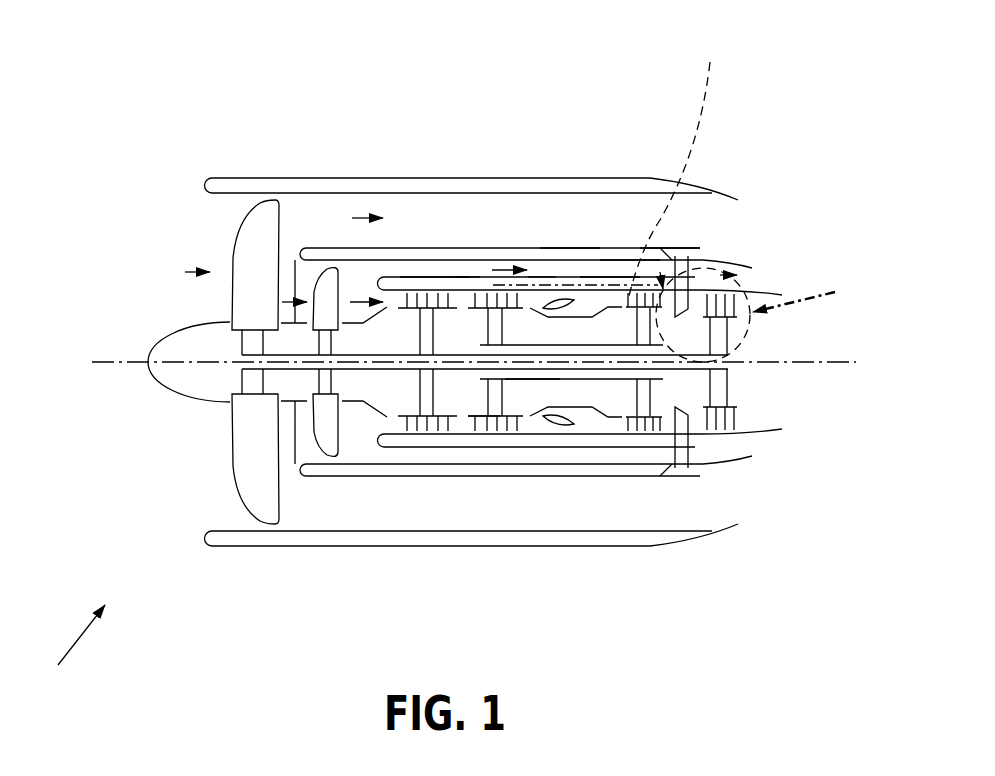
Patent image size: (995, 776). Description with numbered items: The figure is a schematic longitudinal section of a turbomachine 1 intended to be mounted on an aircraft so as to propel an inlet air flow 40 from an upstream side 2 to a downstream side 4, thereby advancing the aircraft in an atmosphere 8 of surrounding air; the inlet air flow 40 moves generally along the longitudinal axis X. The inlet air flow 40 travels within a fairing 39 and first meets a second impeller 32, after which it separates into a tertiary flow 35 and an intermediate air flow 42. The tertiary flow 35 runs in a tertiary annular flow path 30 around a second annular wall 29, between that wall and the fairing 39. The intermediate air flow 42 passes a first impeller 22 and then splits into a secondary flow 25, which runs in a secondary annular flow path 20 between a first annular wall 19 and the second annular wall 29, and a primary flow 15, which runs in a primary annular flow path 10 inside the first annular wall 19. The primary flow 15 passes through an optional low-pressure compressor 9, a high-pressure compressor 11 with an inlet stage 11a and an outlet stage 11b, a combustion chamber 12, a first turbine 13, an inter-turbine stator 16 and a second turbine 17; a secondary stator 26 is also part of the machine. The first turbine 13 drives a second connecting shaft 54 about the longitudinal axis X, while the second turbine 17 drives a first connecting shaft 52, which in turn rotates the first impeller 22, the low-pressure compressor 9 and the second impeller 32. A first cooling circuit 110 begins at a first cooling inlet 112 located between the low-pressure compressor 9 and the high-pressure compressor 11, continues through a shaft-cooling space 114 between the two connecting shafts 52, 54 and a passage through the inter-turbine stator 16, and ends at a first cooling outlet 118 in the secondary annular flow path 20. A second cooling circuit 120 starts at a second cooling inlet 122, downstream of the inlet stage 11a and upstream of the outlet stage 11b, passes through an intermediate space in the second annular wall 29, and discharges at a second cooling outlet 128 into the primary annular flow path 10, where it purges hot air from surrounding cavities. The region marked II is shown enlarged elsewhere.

The turbomachine 1 is at (72, 648).
The upstream side 2 is at (50, 450).
The downstream side 4 is at (836, 470).
The atmosphere 8 is at (50, 98).
The low-pressure compressor 9 is at (417, 437).
The primary annular flow path 10 is at (657, 253).
The high-pressure compressor 11 is at (517, 422).
The inlet stage 11a is at (477, 437).
The outlet stage 11b is at (538, 372).
The combustion chamber 12 is at (560, 437).
The first turbine 13 is at (645, 437).
The primary flow 15 is at (352, 300).
The inter-turbine stator 16 is at (687, 298).
The second turbine 17 is at (720, 423).
The first annular wall 19 is at (630, 266).
The secondary annular flow path 20 is at (485, 280).
The first impeller 22 is at (315, 454).
The secondary flow 25 is at (541, 338).
The secondary stator 26 is at (670, 280).
The second annular wall 29 is at (605, 270).
The tertiary annular flow path 30 is at (565, 253).
The second impeller 32 is at (228, 506).
The tertiary flow 35 is at (358, 216).
The fairing 39 is at (593, 283).
The inlet air flow 40 is at (188, 272).
The intermediate air flow 42 is at (283, 300).
The first connecting shaft 52 is at (363, 371).
The second connecting shaft 54 is at (592, 382).
The first cooling circuit 110 is at (753, 330).
The first cooling inlet 112 is at (444, 273).
The shaft-cooling space 114 is at (548, 207).
The first cooling outlet 118 is at (697, 269).
The second cooling circuit 120 is at (683, 166).
The second cooling inlet 122 is at (468, 337).
The second cooling outlet 128 is at (672, 258).
The longitudinal axis X is at (832, 368).
The part II is at (801, 294).